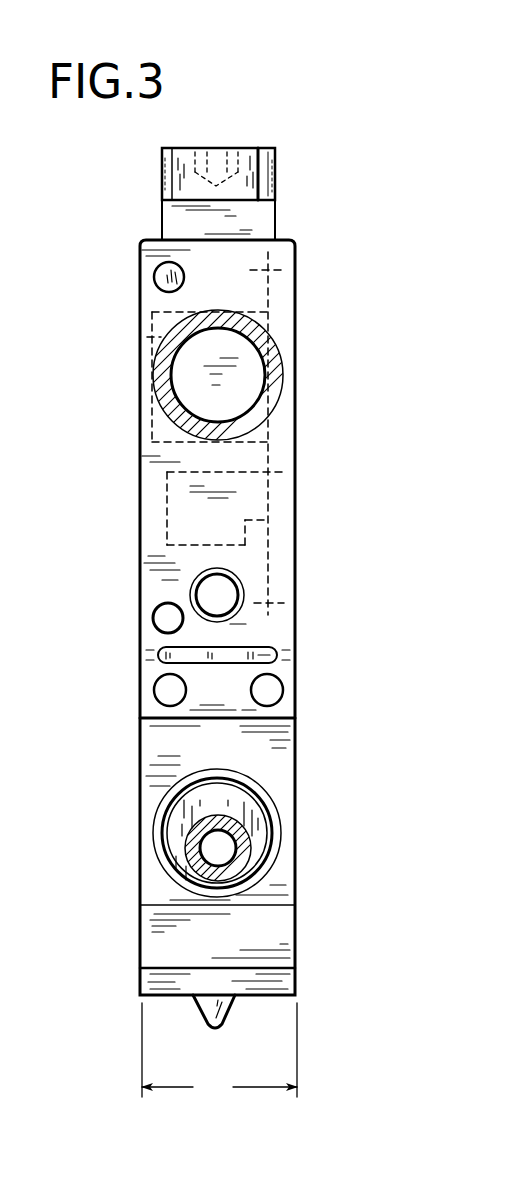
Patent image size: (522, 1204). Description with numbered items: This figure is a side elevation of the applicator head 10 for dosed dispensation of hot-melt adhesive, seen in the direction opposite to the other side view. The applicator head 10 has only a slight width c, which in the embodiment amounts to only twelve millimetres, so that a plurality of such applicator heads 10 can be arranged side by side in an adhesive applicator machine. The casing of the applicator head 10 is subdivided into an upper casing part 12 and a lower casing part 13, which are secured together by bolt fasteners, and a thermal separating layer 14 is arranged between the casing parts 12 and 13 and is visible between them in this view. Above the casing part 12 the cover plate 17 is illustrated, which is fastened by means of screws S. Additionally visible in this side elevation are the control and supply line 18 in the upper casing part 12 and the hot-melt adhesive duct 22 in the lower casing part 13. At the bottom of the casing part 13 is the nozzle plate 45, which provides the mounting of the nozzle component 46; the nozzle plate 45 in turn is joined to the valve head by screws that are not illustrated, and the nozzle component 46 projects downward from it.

The applicator head 10 is at (240, 137).
The screws S is at (258, 176).
The cover plate 17 is at (260, 218).
The casing part 12 is at (127, 423).
The control and supply line 18 is at (273, 383).
The thermal separating layer 14 is at (272, 655).
The casing part 13 is at (128, 797).
The hot-melt adhesive duct 22 is at (227, 843).
The nozzle plate 45 is at (285, 983).
The nozzle component 46 is at (215, 1008).